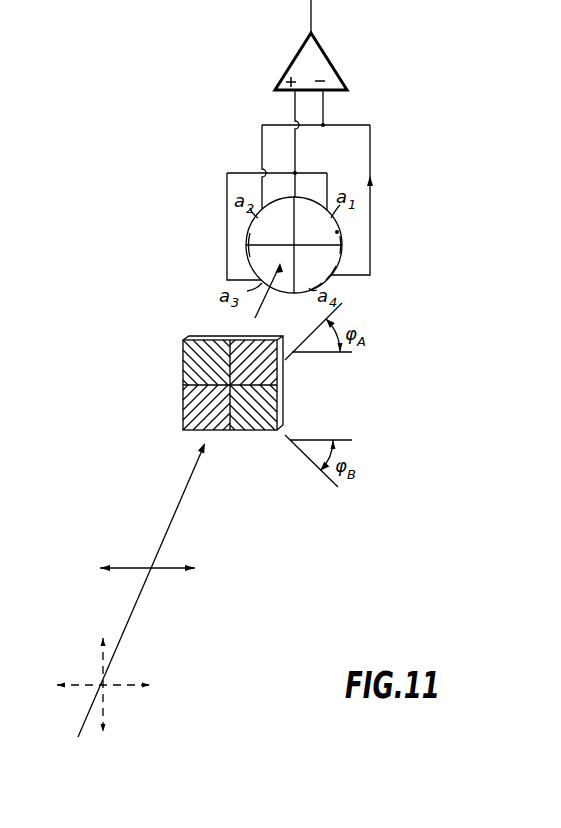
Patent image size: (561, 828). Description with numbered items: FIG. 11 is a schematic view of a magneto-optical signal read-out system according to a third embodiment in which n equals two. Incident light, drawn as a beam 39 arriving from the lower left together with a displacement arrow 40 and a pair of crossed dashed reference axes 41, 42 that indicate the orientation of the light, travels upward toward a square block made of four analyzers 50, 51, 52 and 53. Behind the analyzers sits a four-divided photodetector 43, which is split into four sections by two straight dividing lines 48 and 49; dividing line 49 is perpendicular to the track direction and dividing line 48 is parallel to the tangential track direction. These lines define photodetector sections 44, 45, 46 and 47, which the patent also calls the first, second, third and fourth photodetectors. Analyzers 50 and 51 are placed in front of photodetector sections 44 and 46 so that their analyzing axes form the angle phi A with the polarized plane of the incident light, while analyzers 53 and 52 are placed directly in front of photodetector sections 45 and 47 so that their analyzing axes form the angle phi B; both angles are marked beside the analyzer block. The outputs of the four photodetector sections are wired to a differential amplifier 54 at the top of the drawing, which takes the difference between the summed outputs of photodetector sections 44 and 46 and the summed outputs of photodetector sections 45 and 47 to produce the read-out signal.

The incident light beam 39 is at (127, 628).
The beam displacement direction arrow 40 is at (166, 571).
The horizontal reference axis 41 is at (145, 683).
The vertical reference axis 42 is at (103, 667).
The 4-divided photodetector 43 is at (328, 278).
The photodetector section 44 is at (338, 232).
The photodetector section 45 is at (248, 237).
The photodetector section 46 is at (252, 257).
The photodetector section 47 is at (333, 260).
The dividing line 48 is at (344, 243).
The dividing line 49 is at (290, 293).
The analyzer 50 is at (285, 362).
The analyzer 51 is at (183, 408).
The analyzer 52 is at (285, 403).
The analyzer 53 is at (183, 367).
The differential amplifier 54 is at (318, 63).